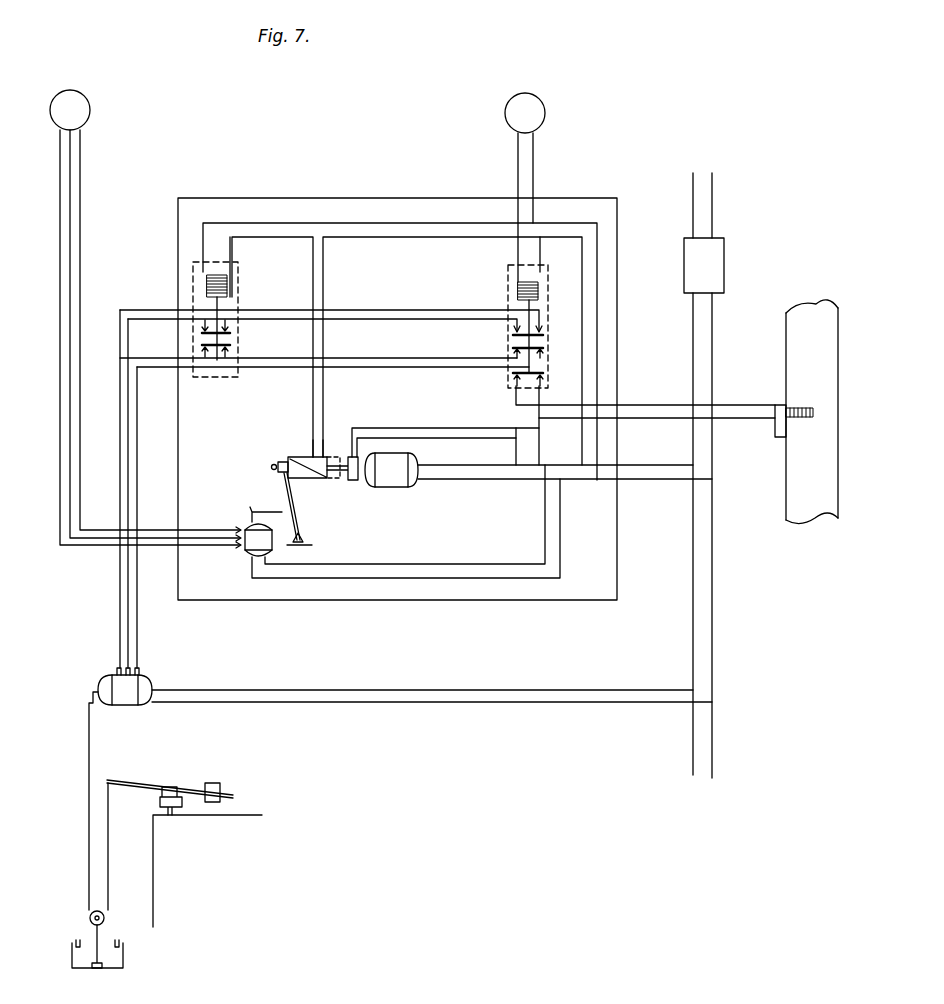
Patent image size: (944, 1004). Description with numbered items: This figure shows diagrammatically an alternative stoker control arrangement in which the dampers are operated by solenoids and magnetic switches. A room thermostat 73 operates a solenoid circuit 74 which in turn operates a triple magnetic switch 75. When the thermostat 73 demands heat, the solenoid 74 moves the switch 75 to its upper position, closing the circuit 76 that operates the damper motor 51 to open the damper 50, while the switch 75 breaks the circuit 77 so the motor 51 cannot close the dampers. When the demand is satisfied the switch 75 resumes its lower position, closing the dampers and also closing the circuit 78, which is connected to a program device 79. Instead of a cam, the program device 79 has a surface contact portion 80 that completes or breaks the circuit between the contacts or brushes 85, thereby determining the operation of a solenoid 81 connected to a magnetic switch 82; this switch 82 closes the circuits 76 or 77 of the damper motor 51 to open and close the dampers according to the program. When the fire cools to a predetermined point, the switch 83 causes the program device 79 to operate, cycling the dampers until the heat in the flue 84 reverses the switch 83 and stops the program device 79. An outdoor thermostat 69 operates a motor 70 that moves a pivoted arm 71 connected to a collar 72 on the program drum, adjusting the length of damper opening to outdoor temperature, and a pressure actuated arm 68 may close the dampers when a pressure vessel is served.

The damper 50 is at (112, 970).
The damper motor 51 is at (123, 706).
The pressure actuated arm 68 is at (180, 787).
The outdoor thermostat 69 is at (90, 110).
The motor 70 is at (243, 547).
The pivoted arm 71 is at (298, 513).
The collar 72 is at (272, 466).
The room thermostat 73 is at (545, 112).
The solenoid circuit 74 is at (518, 283).
The triple magnetic switch 75 is at (541, 372).
The circuit 76 is at (393, 322).
The circuit 77 is at (394, 362).
The circuit 78 is at (512, 390).
The program device 79 is at (327, 478).
The surface contact portion 80 is at (300, 457).
The solenoid 81 is at (218, 288).
The magnetic switch 82 is at (231, 341).
The switch 83 is at (780, 405).
The flue 84 is at (812, 412).
The contacts or brushes 85 is at (312, 423).